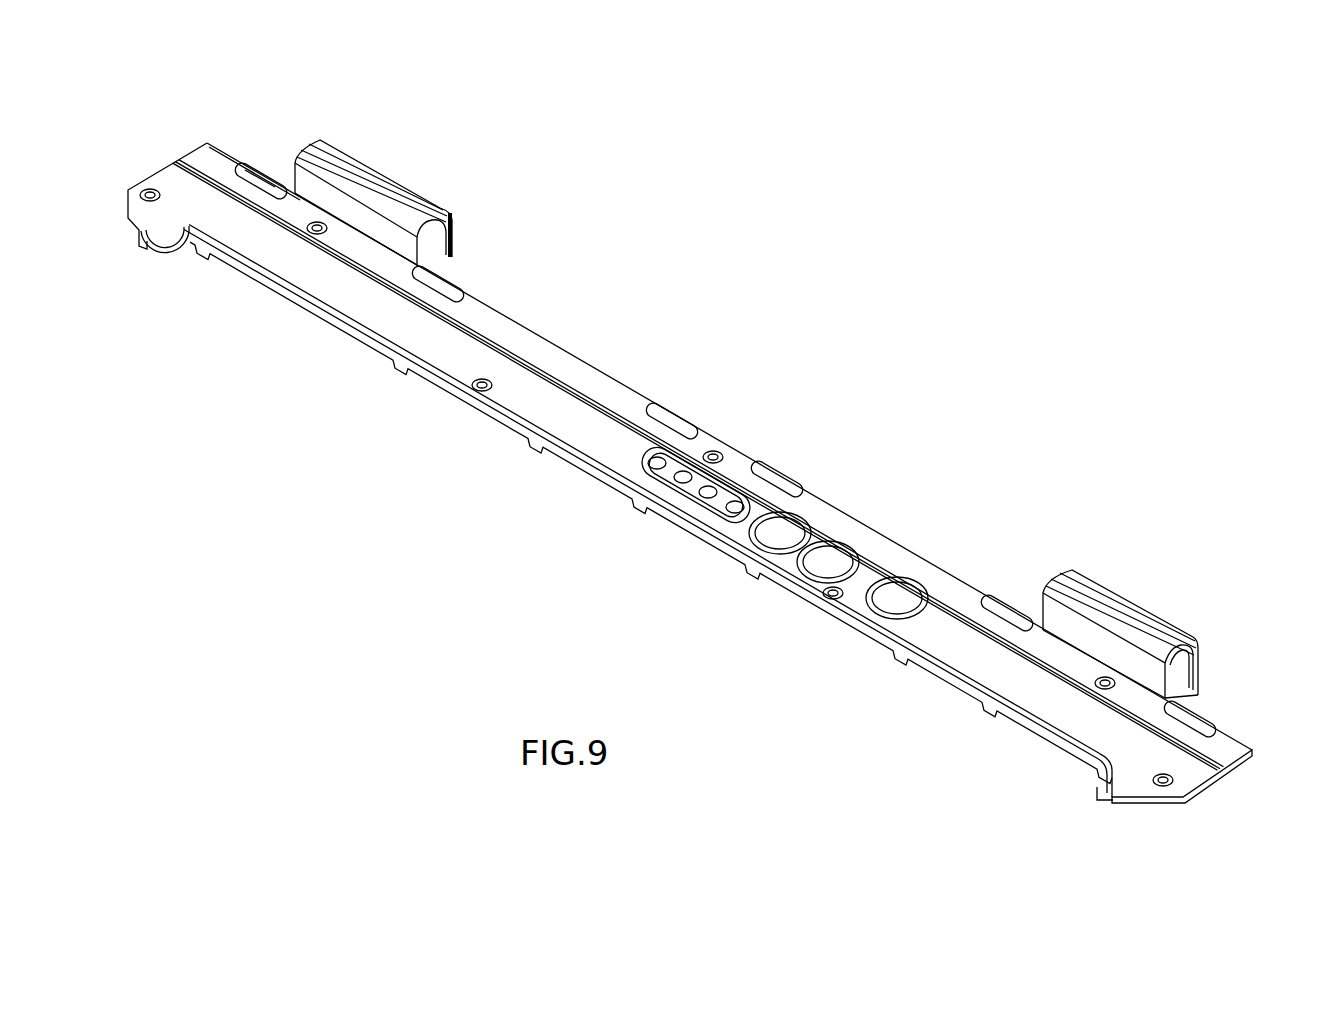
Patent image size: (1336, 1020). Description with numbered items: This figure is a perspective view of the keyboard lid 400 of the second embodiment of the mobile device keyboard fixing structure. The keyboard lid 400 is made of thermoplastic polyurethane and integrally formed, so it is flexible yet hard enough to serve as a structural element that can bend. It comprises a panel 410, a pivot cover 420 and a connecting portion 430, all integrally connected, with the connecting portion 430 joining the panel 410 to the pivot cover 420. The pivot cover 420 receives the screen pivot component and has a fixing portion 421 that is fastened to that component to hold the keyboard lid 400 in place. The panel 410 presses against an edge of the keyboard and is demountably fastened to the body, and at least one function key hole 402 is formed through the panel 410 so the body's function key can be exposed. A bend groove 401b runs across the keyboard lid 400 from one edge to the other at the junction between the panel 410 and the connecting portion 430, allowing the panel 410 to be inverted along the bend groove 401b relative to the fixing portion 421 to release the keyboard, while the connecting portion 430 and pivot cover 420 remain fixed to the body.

The keyboard lid 400 is at (561, 676).
The panel 410 is at (182, 182).
The bend groove 401b is at (247, 197).
The function key hole 402 is at (897, 600).
The pivot cover 420 is at (428, 174).
The fixing portion 421 is at (1202, 668).
The connecting portion 430 is at (877, 550).